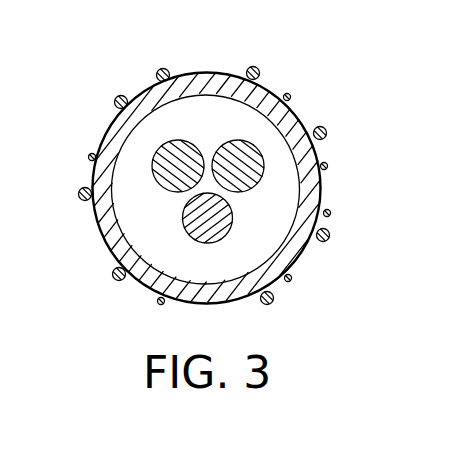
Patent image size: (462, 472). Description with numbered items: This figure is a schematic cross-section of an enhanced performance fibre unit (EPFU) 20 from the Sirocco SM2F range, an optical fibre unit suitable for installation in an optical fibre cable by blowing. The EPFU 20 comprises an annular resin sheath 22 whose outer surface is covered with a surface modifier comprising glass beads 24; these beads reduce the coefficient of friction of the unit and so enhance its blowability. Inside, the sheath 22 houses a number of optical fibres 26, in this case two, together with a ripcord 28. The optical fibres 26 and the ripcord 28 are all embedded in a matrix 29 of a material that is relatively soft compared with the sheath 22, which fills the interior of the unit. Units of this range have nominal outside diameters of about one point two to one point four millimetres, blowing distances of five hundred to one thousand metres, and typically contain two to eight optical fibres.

The enhanced performance fibre unit 20 is at (322, 106).
The resin sheath 22 is at (322, 189).
The glass beads 24 is at (274, 301).
The optical fibres 26 is at (238, 140).
The ripcord 28 is at (208, 243).
The matrix 29 is at (130, 211).